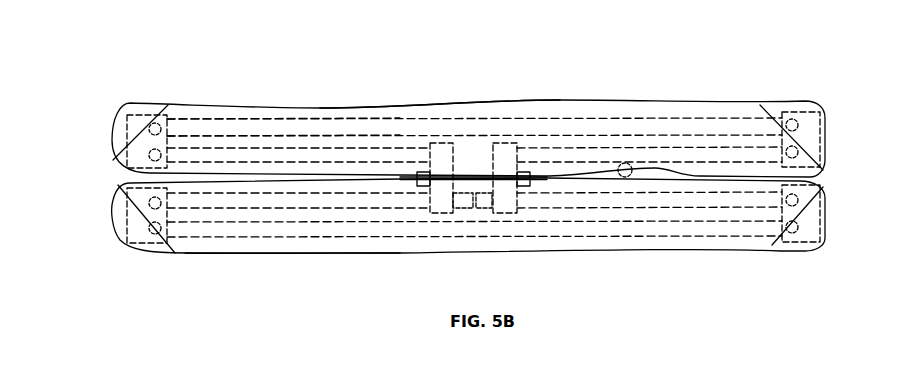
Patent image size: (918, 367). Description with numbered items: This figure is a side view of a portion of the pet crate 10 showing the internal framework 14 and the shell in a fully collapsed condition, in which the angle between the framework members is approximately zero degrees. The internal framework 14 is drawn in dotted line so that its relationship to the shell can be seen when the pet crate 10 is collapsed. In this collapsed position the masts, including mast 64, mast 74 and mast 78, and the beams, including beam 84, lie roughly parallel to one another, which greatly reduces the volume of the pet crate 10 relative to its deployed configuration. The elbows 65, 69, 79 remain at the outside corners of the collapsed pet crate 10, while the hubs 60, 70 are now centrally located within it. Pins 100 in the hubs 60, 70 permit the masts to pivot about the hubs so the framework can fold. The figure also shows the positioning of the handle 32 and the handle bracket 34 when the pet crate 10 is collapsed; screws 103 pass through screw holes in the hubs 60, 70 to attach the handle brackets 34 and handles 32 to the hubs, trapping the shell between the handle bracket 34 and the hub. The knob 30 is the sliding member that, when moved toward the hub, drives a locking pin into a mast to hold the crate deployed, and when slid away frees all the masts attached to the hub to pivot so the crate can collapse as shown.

The pet crate 10 is at (288, 298).
The internal framework 14 is at (377, 125).
The knob 30 is at (620, 165).
The handle 32 is at (408, 178).
The handle bracket 34 is at (427, 180).
The hub 60 is at (437, 172).
The mast 64 is at (247, 158).
The elbow 65 is at (138, 140).
The elbow 69 is at (137, 217).
The hub 70 is at (505, 172).
The mast 74 is at (638, 157).
The mast 78 is at (553, 200).
The elbow 79 is at (803, 237).
The beam 84 is at (327, 128).
The pins 100 is at (158, 153).
The screws 103 is at (443, 177).